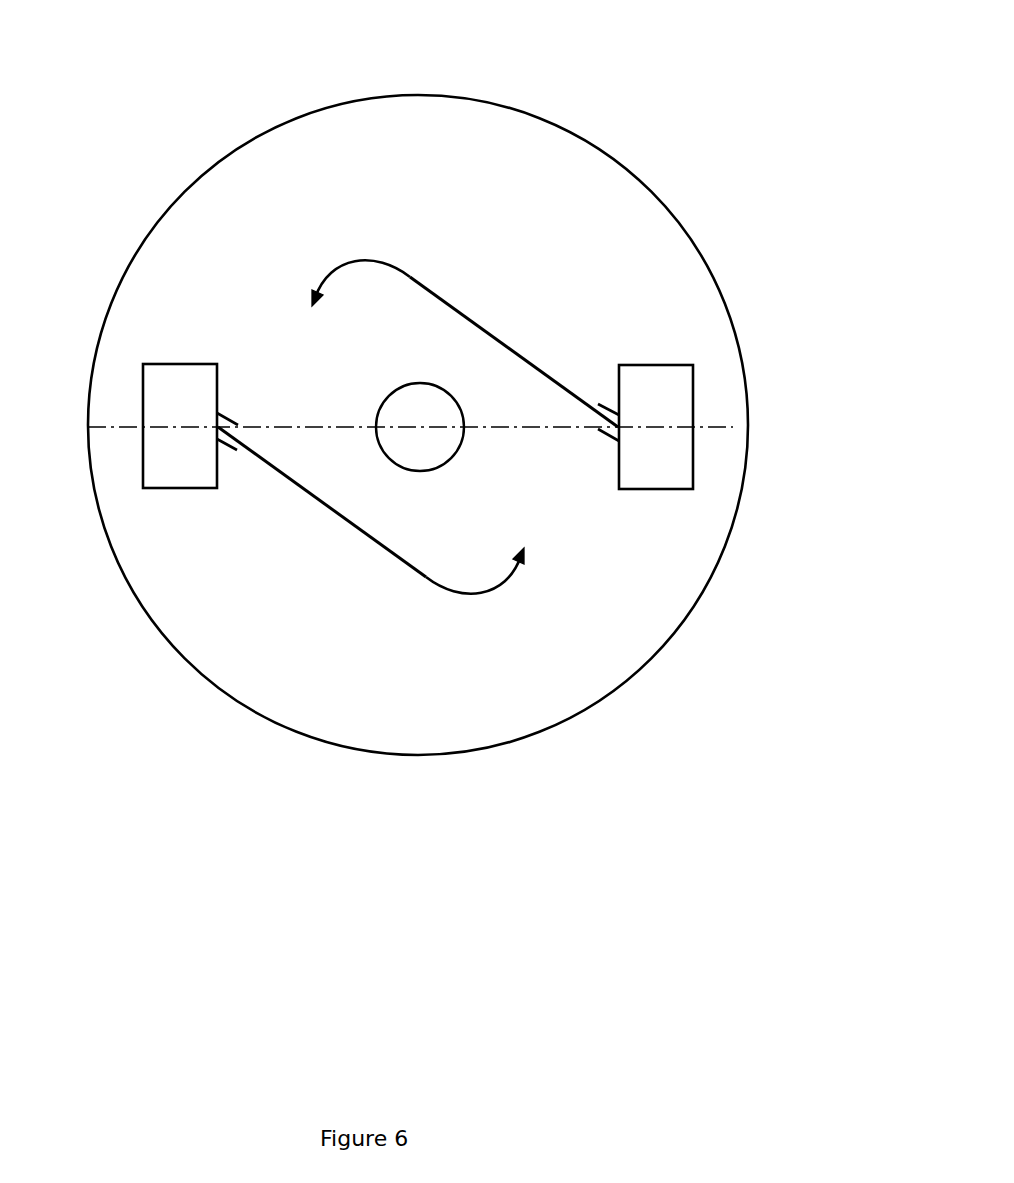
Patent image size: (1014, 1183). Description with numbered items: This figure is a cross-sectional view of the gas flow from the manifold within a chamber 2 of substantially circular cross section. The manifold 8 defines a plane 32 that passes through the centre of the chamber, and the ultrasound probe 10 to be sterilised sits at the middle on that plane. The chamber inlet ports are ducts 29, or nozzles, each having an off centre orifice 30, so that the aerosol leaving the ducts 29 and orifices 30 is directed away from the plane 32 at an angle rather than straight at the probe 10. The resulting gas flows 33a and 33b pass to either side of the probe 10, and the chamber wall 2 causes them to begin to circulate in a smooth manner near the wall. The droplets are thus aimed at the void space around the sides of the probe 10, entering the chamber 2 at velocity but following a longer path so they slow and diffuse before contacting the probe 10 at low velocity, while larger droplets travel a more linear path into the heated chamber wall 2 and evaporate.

The chamber 2 is at (470, 752).
The manifold 8 is at (167, 454).
The probe 10 is at (397, 387).
The duct 29 is at (236, 451).
The off centre orifice 30 is at (242, 426).
The plane 32 is at (733, 427).
The gas flow 33a is at (460, 307).
The gas flow 33b is at (373, 538).